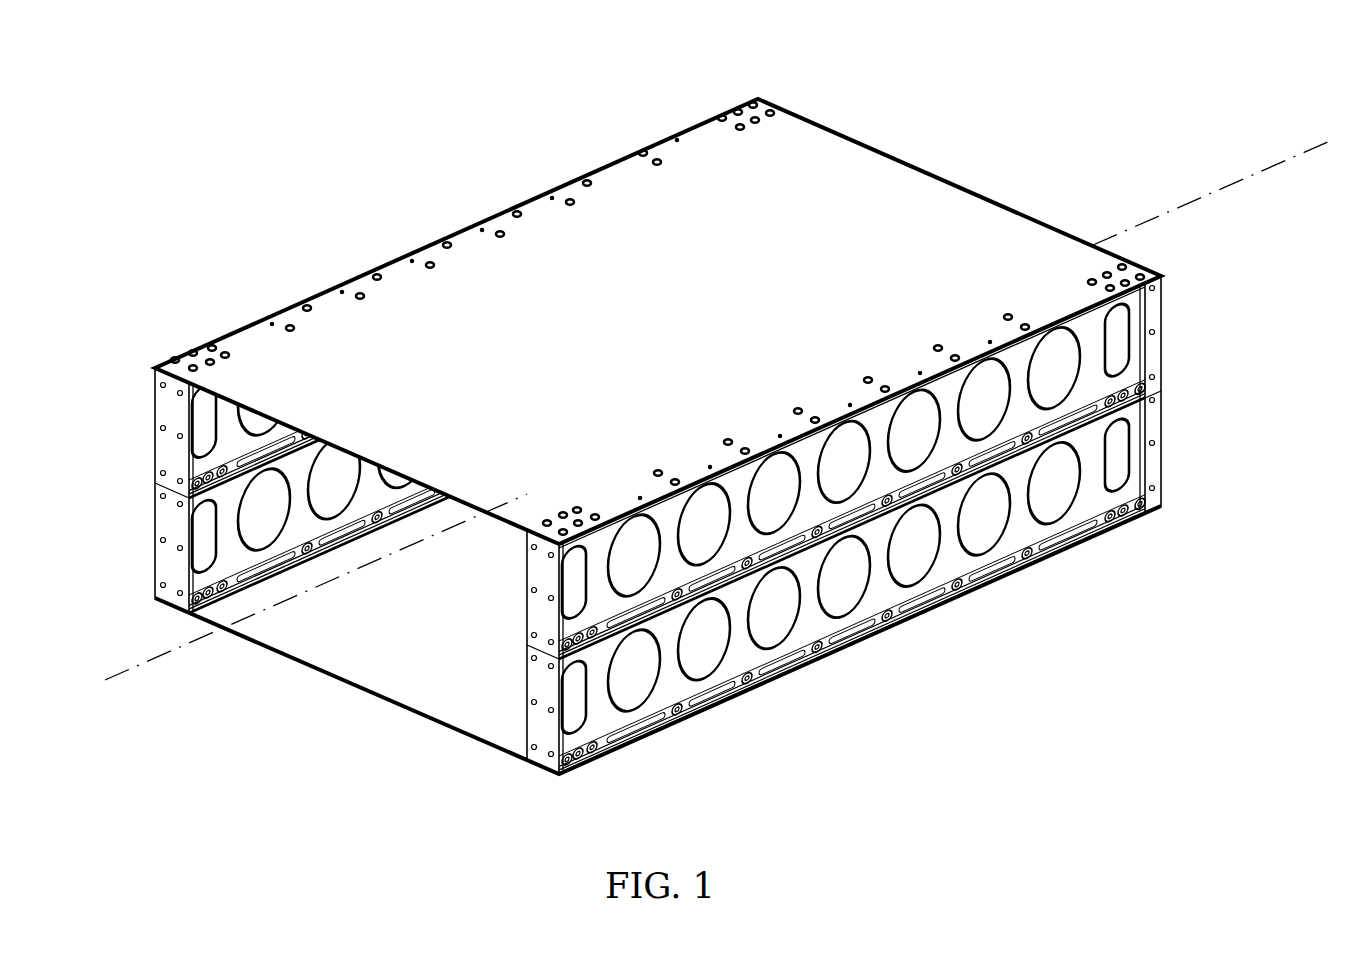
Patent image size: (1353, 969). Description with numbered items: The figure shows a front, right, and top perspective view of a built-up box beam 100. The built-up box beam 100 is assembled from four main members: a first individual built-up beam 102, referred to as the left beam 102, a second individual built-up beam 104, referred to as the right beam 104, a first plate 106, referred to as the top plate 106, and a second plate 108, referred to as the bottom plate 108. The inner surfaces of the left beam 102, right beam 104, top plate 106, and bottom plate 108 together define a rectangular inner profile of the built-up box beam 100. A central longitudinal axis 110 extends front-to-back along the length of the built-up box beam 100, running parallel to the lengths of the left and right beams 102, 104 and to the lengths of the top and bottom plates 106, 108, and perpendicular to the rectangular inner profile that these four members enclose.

The built-up box beam 100 is at (310, 115).
The first individual built-up beam 102 is at (132, 445).
The second individual built-up beam 104 is at (813, 612).
The first plate 106 is at (903, 198).
The second plate 108 is at (467, 661).
The central longitudinal axis 110 is at (163, 654).